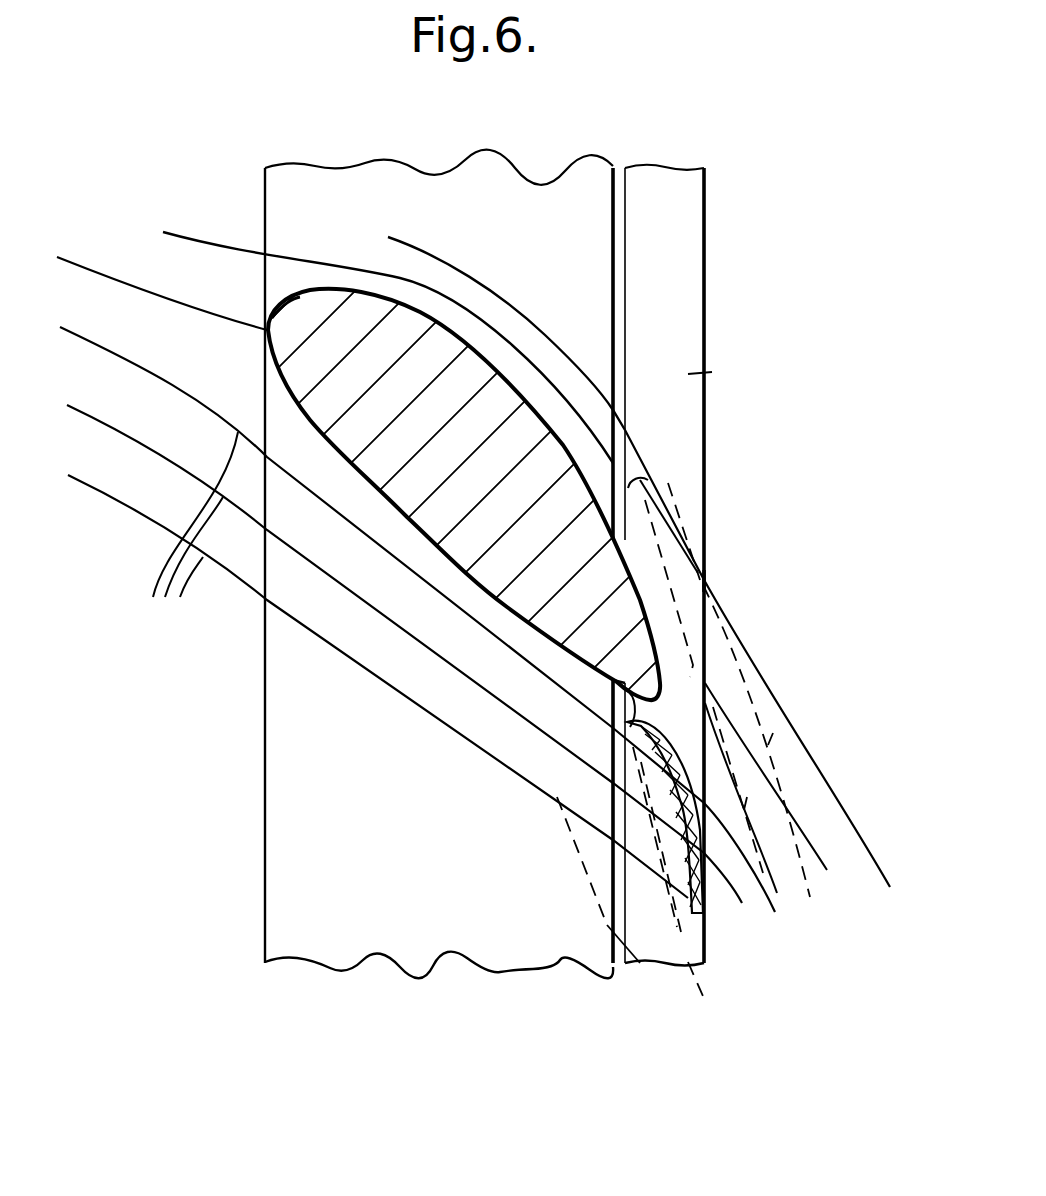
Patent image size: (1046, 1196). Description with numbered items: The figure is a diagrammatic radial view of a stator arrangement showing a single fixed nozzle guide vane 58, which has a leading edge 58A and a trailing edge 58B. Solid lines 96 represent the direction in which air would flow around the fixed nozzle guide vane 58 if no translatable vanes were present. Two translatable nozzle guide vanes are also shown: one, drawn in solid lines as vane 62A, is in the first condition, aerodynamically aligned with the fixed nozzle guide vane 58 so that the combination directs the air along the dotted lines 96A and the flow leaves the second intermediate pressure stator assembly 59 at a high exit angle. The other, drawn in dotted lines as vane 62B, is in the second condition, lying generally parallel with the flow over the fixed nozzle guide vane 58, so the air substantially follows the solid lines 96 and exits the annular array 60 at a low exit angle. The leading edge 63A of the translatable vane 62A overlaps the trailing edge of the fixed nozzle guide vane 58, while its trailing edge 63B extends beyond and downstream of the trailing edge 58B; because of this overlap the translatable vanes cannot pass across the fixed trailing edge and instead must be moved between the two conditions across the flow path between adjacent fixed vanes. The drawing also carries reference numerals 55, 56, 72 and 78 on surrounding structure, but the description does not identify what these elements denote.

The outer skin panel 55 is at (284, 712).
The slot in skin panel 56 is at (578, 208).
The fixed nozzle guide vane 58 is at (438, 340).
The leading edge 58A is at (293, 317).
The trailing edge 58B is at (640, 657).
The second intermediate pressure stator assembly 59 is at (698, 373).
The annular array 60 is at (717, 540).
The translatable nozzle guide vane 62A is at (770, 910).
The translatable nozzle guide vane 62B is at (688, 583).
The leading edge 63A is at (612, 684).
The trailing edge 63B is at (707, 917).
The core 72 is at (363, 933).
The adhesive layer 78 is at (688, 298).
The lines 96 is at (356, 263).
The dotted lines 96A is at (747, 797).